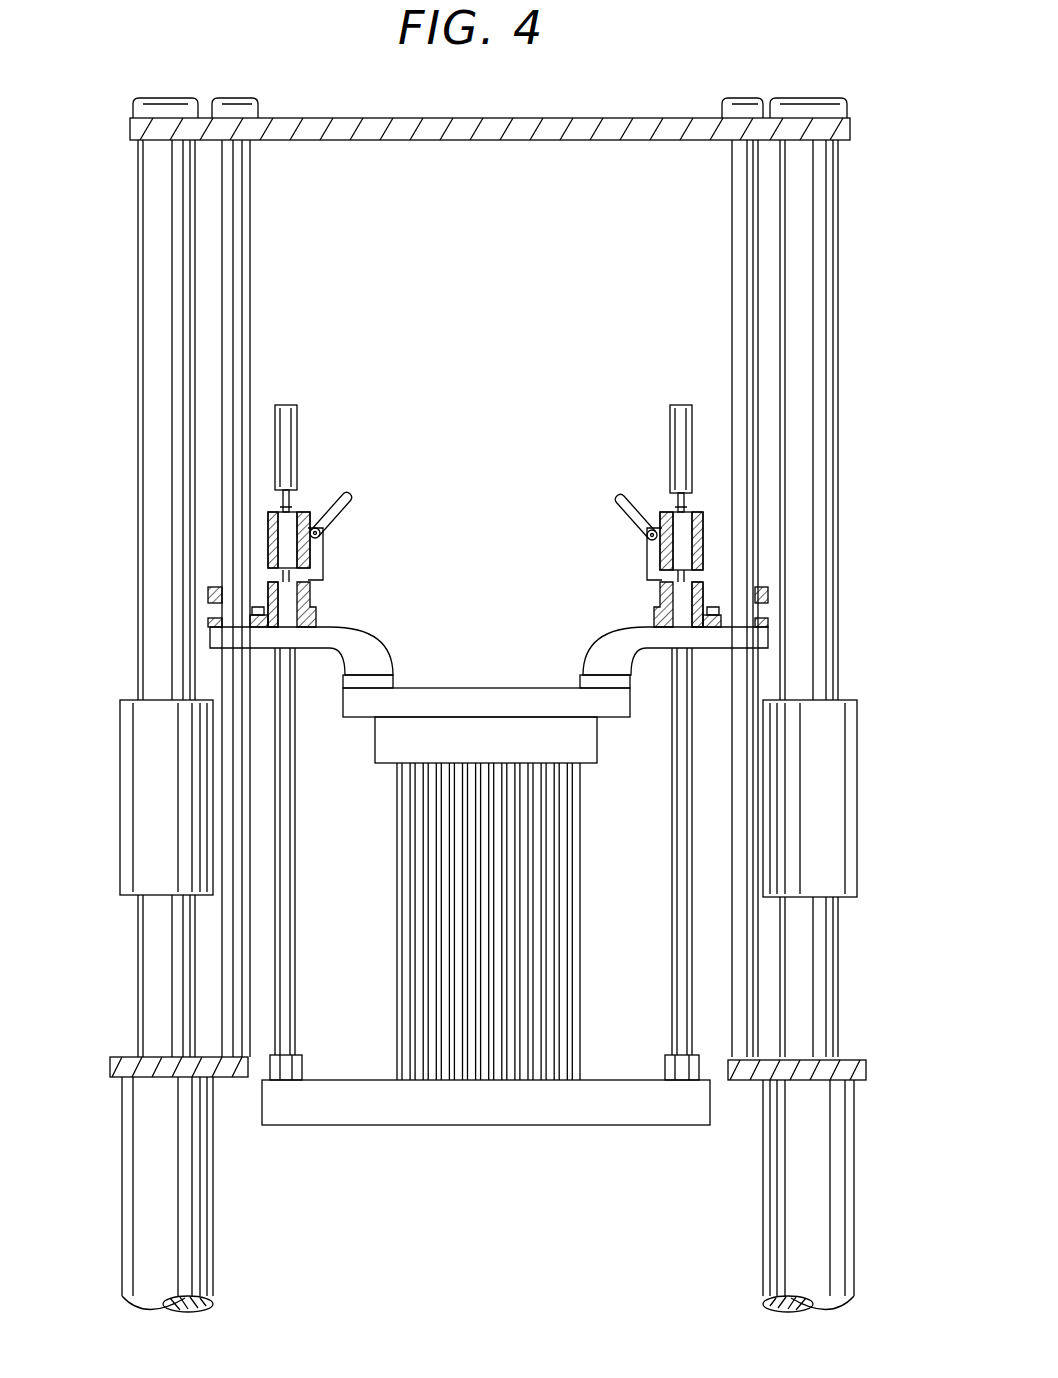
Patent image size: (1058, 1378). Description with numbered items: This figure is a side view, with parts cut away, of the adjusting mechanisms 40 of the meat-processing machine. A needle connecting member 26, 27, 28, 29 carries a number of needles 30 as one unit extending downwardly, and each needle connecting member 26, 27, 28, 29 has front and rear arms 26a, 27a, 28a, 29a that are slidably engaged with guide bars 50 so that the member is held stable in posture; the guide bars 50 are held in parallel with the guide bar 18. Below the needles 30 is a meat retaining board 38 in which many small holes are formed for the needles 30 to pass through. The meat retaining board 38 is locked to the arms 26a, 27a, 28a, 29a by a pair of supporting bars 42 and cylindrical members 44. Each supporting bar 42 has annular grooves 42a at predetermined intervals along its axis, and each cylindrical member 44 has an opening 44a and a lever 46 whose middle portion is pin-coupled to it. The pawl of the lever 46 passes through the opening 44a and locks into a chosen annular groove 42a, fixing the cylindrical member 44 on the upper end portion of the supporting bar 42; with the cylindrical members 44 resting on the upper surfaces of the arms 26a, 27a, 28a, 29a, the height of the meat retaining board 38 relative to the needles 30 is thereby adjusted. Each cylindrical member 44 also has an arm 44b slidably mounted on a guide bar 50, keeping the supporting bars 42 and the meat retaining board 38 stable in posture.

The guide bar 18 is at (150, 305).
The guide bar 50 is at (248, 233).
The supporting bar 42 is at (298, 945).
The annular groove 42a is at (288, 498).
The cylindrical member 44 is at (302, 511).
The opening 44a is at (312, 589).
The arm 44b is at (210, 590).
The lever 46 is at (350, 500).
The adjusting mechanism 40 is at (340, 539).
The front and rear arms 26a is at (878, 704).
The front and rear arms 27a is at (495, 665).
The front and rear arms 28a is at (495, 668).
The front and rear arms 29a is at (495, 668).
The needle connecting member 26 is at (623, 854).
The needle connecting member 27 is at (500, 772).
The needle connecting member 28 is at (500, 772).
The needle connecting member 29 is at (500, 772).
The needle 30 is at (572, 902).
The meat retaining board 38 is at (657, 1110).